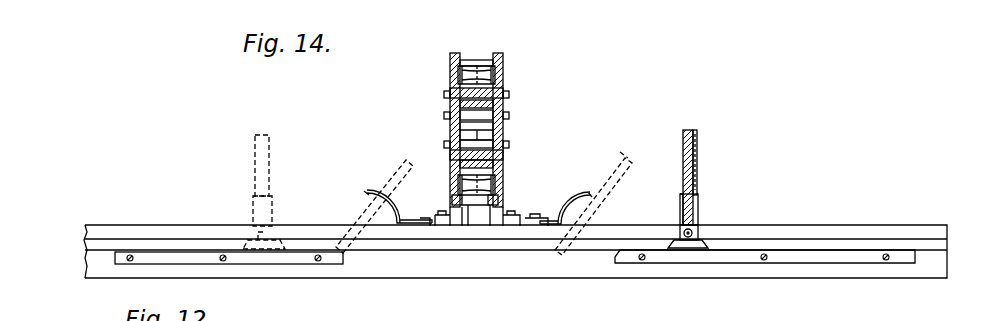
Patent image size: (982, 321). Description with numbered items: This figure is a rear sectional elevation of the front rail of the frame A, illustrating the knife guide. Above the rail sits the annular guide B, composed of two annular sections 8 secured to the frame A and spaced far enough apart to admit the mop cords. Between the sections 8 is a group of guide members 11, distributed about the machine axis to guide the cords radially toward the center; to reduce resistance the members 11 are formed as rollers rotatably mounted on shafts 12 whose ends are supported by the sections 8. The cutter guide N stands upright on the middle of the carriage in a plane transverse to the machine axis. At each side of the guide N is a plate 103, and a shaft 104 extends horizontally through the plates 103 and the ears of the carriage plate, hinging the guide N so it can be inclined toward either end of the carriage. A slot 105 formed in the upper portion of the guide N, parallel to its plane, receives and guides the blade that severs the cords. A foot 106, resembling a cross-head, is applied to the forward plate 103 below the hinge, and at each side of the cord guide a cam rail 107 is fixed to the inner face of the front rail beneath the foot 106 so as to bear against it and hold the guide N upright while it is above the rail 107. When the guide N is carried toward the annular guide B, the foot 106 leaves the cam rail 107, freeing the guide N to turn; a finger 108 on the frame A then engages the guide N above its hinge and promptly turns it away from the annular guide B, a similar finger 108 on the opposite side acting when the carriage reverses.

The frame A is at (515, 252).
The annular guide B is at (481, 130).
The annular sections 8 is at (512, 200).
The guide members 11 is at (502, 58).
The shafts 12 is at (502, 64).
The cutter guide N is at (478, 192).
The plate 103 is at (698, 208).
The shaft 104 is at (693, 235).
The slot 105 is at (697, 132).
The foot 106 is at (703, 249).
The cam rail 107 is at (250, 257).
The finger 108 is at (369, 192).